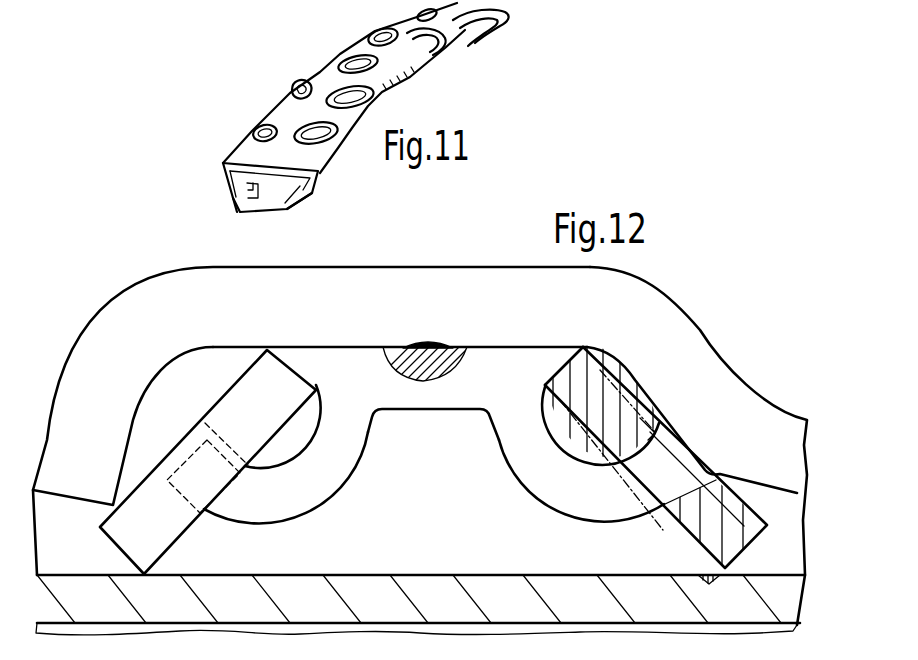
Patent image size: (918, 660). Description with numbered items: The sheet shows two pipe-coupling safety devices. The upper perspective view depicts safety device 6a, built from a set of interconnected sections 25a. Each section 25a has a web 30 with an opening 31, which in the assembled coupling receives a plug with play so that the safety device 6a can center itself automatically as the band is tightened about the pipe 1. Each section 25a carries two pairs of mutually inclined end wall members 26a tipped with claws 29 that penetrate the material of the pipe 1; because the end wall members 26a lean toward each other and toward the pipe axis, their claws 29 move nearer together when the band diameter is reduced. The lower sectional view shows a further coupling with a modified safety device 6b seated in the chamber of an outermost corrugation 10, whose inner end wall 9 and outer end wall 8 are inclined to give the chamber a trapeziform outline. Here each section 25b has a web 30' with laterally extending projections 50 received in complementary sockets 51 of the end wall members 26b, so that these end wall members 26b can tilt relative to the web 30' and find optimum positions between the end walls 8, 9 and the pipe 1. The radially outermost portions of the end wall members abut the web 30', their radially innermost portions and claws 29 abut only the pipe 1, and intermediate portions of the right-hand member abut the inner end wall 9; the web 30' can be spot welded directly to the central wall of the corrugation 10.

In FIG. 12, the pipe 1 is at (438, 581).
In FIG. 11, the safety device 6a is at (461, 73).
In FIG. 12, the safety device 6b is at (423, 441).
In FIG. 12, the outer end wall 8 is at (53, 407).
In FIG. 12, the inner end wall 9 is at (744, 387).
In FIG. 12, the outermost corrugation 10 is at (431, 267).
In FIG. 11, the section 25a is at (327, 68).
In FIG. 12, the section 25b is at (395, 411).
In FIG. 11, the end wall member 26a is at (230, 192).
In FIG. 12, the end wall member 26b is at (182, 538).
In FIG. 11, the claw 29 is at (287, 210).
In FIG. 12, the claw 29 is at (127, 573).
In FIG. 11, the web 30 is at (270, 86).
In FIG. 12, the web 30' is at (446, 335).
In FIG. 11, the opening 31 is at (356, 56).
In FIG. 12, the projection 50 is at (673, 453).
In FIG. 12, the socket 51 is at (163, 480).